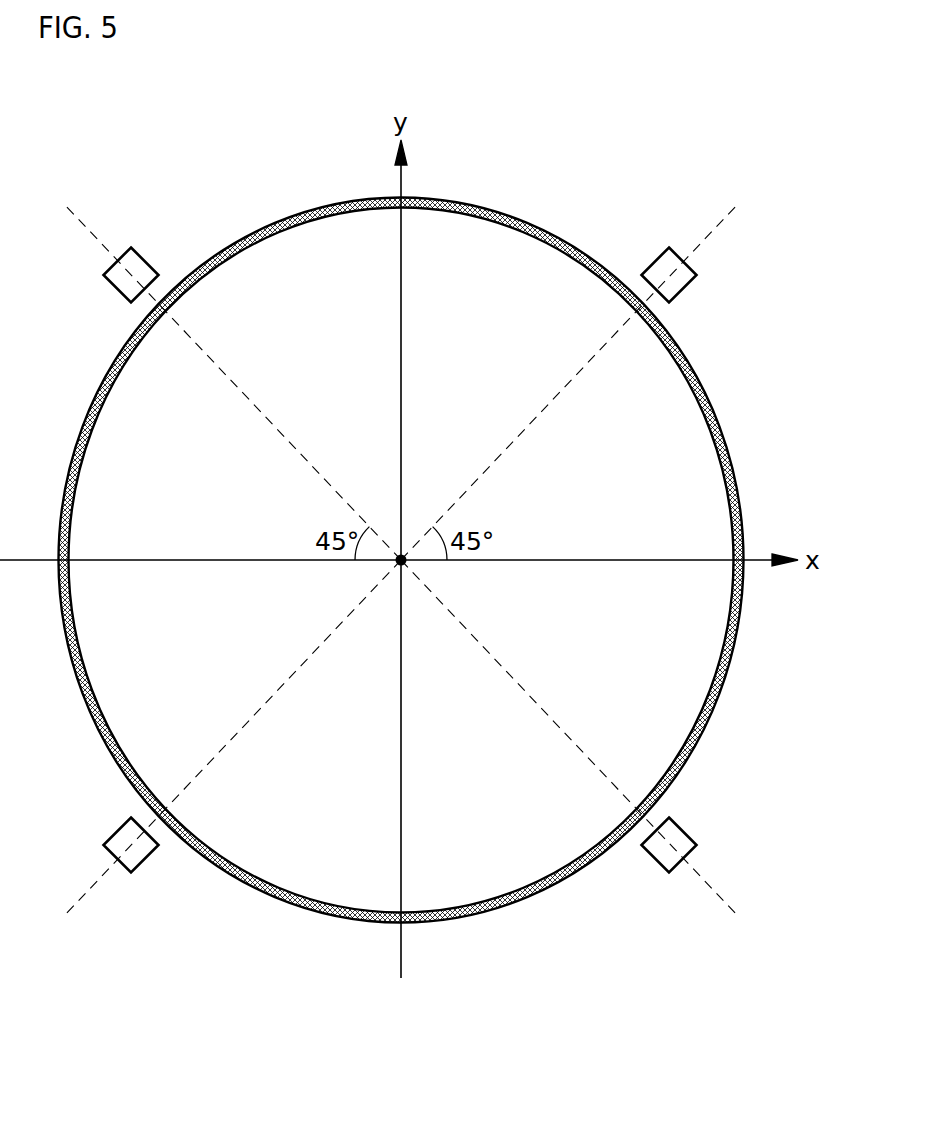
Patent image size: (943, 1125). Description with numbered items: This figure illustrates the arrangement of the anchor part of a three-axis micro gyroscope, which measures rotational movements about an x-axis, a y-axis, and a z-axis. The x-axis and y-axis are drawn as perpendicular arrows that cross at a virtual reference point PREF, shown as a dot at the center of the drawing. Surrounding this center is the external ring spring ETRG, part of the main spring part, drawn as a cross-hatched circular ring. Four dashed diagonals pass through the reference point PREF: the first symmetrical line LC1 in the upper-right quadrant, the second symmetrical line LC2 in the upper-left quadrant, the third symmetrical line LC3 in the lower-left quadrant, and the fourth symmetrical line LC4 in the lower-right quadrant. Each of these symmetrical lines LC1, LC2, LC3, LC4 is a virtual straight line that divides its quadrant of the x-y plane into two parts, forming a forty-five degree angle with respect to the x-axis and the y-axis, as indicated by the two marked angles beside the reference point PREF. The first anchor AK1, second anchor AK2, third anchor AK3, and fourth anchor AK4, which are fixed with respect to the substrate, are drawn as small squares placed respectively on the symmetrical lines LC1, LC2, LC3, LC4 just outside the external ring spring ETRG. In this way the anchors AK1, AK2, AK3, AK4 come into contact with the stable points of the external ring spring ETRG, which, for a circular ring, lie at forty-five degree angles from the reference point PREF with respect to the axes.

The external ring spring ETRG is at (527, 220).
The reference point PREF is at (403, 556).
The first symmetrical line LC1 is at (530, 422).
The second symmetrical line LC2 is at (256, 402).
The third symmetrical line LC3 is at (259, 708).
The fourth symmetrical line LC4 is at (528, 691).
The first anchor AK1 is at (684, 290).
The second anchor AK2 is at (146, 254).
The third anchor AK3 is at (155, 858).
The fourth anchor AK4 is at (683, 830).